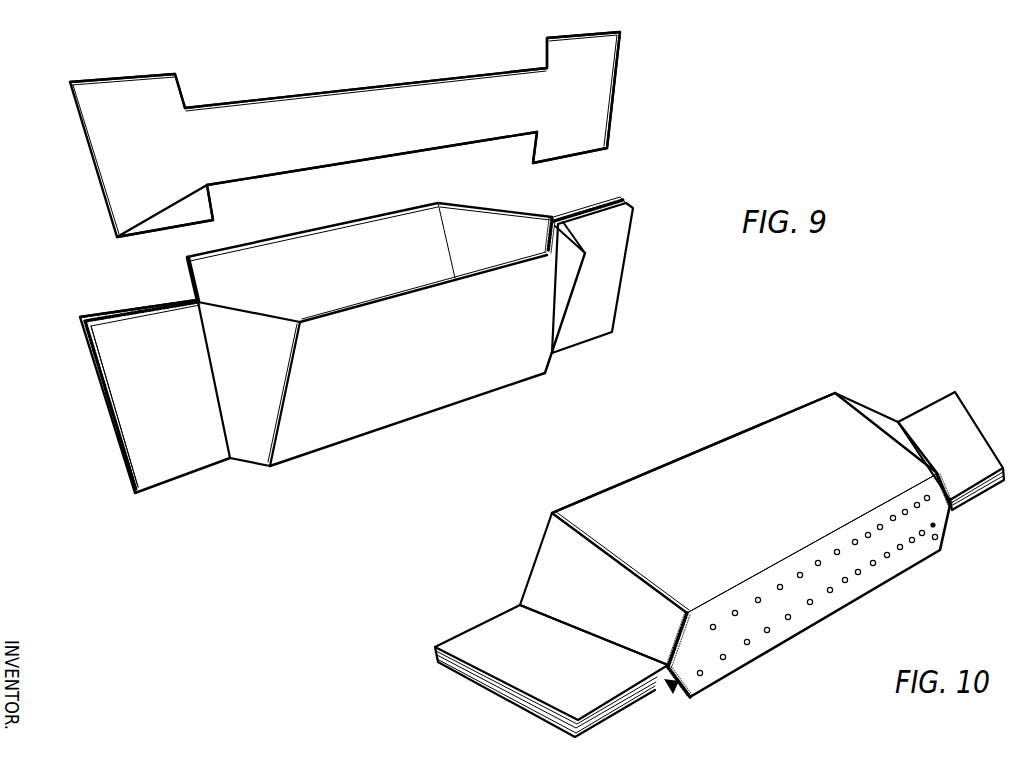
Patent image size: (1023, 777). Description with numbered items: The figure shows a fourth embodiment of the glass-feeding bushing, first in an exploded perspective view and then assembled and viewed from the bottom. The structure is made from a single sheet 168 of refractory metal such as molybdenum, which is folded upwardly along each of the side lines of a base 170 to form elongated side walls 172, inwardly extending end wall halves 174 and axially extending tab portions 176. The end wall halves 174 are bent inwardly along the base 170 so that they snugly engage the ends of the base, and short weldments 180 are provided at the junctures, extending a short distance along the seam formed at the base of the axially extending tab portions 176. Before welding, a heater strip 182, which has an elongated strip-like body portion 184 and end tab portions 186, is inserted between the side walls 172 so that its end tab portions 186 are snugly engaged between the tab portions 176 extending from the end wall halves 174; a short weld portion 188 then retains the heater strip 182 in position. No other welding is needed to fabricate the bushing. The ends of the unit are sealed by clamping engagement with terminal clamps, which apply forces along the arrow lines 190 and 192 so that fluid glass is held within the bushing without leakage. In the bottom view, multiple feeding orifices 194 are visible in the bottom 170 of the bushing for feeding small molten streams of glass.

In FIG. 9, the sheet 168 is at (361, 348).
In FIG. 10, the sheet 168 is at (723, 564).
In FIG. 10, the base 170 is at (818, 586).
In FIG. 9, the side walls 172 is at (419, 207).
In FIG. 10, the side walls 172 is at (792, 420).
In FIG. 9, the end wall halves 174 is at (255, 450).
In FIG. 10, the end wall halves 174 is at (550, 552).
In FIG. 9, the tab portions 176 is at (610, 282).
In FIG. 10, the tab portions 176 is at (478, 640).
In FIG. 10, the weldments 180 is at (681, 653).
In FIG. 9, the heater strip 182 is at (348, 134).
In FIG. 9, the body portion 184 is at (453, 88).
In FIG. 9, the end tab portions 186 is at (108, 163).
In FIG. 10, the weld portion 188 is at (658, 696).
In FIG. 9, the arrow line 190 is at (37, 313).
In FIG. 9, the arrow line 192 is at (112, 355).
In FIG. 10, the feeding orifices 194 is at (830, 591).